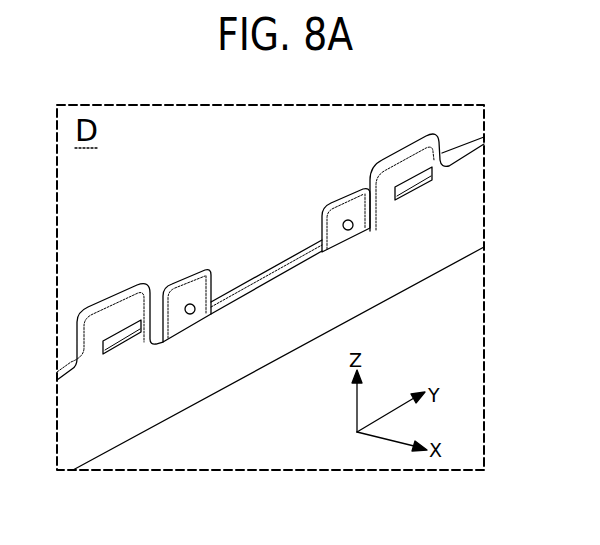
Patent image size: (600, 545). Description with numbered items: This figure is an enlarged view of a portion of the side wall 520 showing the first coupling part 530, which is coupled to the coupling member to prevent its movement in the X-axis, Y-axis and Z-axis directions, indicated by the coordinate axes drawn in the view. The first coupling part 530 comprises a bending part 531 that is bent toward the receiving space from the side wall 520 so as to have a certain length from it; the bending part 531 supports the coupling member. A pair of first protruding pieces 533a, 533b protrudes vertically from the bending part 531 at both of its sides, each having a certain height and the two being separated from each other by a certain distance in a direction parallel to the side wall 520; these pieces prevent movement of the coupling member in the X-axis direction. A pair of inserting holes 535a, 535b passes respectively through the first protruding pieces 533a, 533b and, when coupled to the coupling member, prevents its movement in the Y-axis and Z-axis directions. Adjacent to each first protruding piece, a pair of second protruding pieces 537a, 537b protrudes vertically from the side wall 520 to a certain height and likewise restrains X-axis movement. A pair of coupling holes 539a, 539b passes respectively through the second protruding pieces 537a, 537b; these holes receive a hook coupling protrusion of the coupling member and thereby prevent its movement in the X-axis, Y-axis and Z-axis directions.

The side wall 520 is at (378, 293).
The first coupling part 530 is at (321, 294).
The bending part 531 is at (288, 262).
The first protruding piece 533a is at (429, 226).
The first protruding piece 533b is at (217, 323).
The inserting hole 535a is at (352, 229).
The inserting hole 535b is at (194, 313).
The second protruding piece 537a is at (477, 180).
The second protruding piece 537b is at (130, 344).
The coupling hole 539a is at (408, 181).
The coupling hole 539b is at (128, 338).